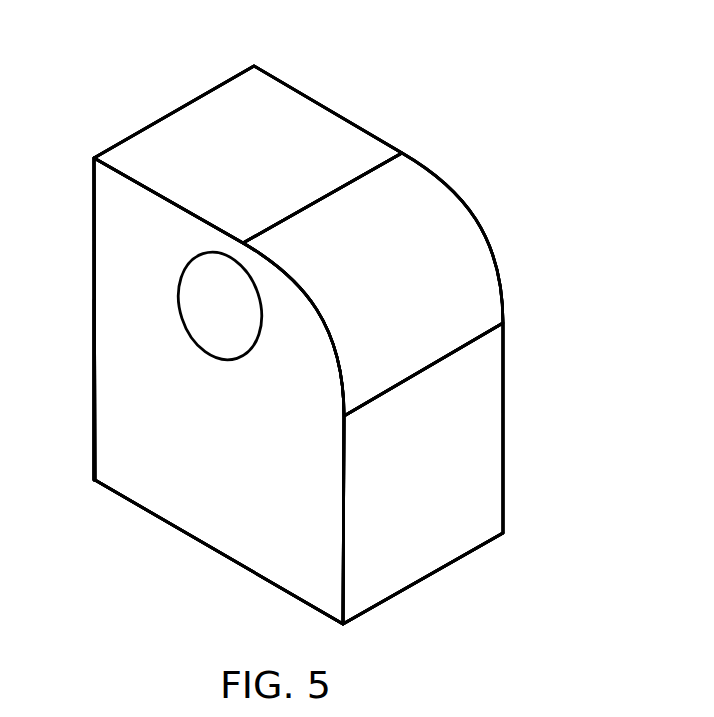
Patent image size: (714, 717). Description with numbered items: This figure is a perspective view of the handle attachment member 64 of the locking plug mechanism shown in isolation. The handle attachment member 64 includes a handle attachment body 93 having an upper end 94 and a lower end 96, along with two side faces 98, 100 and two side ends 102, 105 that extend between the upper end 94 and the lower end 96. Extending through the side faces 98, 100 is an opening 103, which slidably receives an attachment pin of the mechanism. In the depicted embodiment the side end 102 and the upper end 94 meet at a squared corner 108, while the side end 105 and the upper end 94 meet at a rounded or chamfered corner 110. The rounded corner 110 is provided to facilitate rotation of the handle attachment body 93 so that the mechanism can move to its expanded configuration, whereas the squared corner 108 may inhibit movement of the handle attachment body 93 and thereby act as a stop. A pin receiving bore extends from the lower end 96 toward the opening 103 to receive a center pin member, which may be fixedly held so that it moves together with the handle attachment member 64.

The upper end 94 is at (298, 318).
The handle attachment member 64 is at (362, 345).
The side face 100 is at (365, 345).
The lower end 96 is at (297, 556).
The squared corner 108 is at (175, 111).
The rounded corner 110 is at (417, 235).
The side end 105 is at (470, 460).
The side end 102 is at (95, 273).
The handle attachment body 93 is at (103, 392).
The side face 98 is at (170, 433).
The opening 103 is at (190, 305).